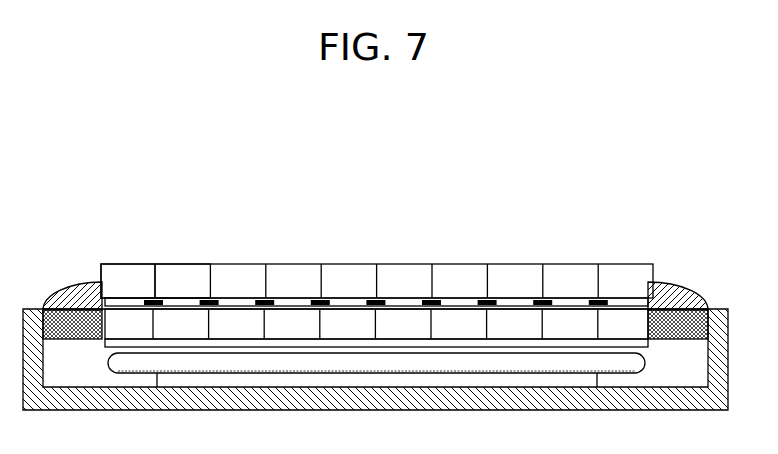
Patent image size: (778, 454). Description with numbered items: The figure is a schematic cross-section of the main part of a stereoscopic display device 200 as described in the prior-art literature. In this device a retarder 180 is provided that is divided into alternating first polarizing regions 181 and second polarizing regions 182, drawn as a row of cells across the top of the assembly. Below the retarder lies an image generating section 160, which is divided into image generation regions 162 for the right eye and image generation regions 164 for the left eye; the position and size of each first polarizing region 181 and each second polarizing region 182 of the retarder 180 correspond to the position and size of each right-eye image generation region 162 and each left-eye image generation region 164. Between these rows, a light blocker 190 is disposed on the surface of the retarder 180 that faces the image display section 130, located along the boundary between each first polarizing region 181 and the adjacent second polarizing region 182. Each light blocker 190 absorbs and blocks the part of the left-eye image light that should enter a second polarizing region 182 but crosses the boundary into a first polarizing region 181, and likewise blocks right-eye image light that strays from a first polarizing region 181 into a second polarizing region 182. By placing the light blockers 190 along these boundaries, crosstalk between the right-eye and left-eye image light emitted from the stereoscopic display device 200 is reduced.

The stereoscopic display device 200 is at (647, 191).
The image display section 130 is at (76, 354).
The image generating section 160 is at (682, 341).
The image generation regions for the right eye 162 is at (135, 329).
The image generation regions for the left eye 164 is at (190, 329).
The retarder 180 is at (133, 256).
The first polarizing regions 181 is at (125, 275).
The second polarizing regions 182 is at (182, 274).
The light blocker 190 is at (212, 300).